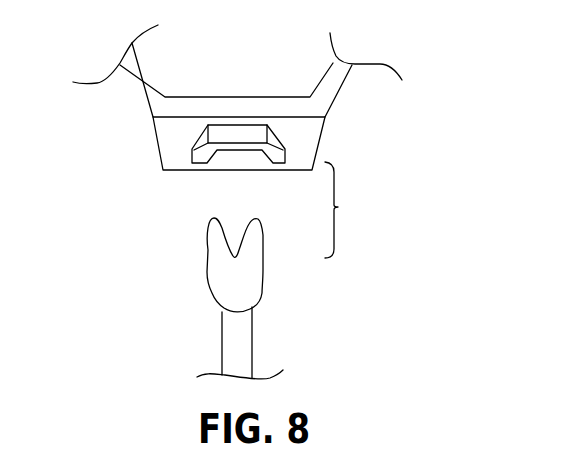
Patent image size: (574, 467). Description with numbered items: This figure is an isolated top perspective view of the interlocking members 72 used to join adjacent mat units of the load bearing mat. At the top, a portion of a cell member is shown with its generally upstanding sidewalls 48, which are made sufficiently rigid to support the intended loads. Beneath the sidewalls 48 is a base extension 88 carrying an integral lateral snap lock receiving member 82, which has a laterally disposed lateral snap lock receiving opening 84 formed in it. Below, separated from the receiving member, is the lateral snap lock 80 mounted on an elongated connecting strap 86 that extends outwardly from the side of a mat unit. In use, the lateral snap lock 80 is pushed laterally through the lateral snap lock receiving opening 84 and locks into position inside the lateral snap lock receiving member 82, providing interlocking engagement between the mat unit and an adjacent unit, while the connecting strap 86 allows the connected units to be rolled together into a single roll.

The sidewall 48 is at (145, 82).
The base extension 88 is at (170, 136).
The lateral snap lock receiving opening 84 is at (235, 157).
The lateral snap lock receiving member 82 is at (260, 133).
The interlocking members 72 is at (338, 207).
The lateral snap lock 80 is at (243, 281).
The connecting strap 86 is at (243, 340).